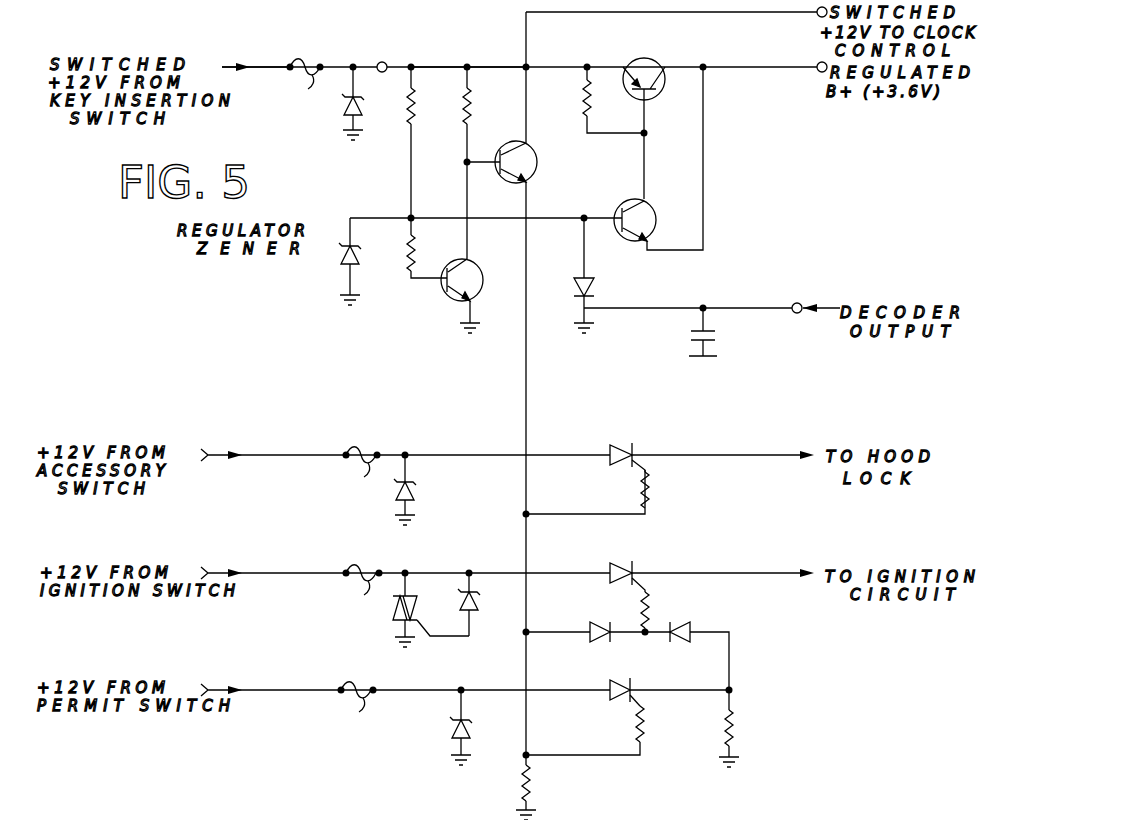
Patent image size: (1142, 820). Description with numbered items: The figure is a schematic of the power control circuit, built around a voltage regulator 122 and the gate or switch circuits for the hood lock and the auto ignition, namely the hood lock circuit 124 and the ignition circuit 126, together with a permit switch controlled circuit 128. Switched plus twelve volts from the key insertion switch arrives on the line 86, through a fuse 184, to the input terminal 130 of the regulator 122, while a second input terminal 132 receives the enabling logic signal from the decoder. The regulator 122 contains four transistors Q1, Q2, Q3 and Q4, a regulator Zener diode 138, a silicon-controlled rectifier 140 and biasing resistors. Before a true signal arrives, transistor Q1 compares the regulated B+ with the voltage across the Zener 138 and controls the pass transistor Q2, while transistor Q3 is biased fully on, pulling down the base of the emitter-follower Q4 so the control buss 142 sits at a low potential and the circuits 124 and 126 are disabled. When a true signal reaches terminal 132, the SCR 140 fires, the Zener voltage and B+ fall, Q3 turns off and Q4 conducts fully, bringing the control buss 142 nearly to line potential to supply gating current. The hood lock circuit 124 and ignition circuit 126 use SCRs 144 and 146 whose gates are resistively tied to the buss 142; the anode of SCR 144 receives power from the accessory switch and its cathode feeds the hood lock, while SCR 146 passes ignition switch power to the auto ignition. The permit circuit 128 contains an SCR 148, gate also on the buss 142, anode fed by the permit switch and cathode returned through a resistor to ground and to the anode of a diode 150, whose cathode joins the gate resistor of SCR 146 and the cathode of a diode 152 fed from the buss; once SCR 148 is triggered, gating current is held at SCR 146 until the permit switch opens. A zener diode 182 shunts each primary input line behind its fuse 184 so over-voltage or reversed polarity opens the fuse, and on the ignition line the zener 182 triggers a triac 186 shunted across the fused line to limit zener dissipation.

The line 86 is at (274, 67).
The fuse 184 is at (314, 74).
The zener diode 182 is at (340, 110).
The input terminal 130 is at (384, 62).
The voltage regulator 122 is at (481, 63).
The regulator Zener diode 138 is at (338, 262).
The silicon-controlled rectifier 140 is at (598, 288).
The input terminal 132 is at (795, 302).
The control buss 142 is at (525, 398).
The SCR 144 is at (623, 446).
The hood lock circuit 124 is at (654, 452).
The SCR 146 is at (624, 564).
The ignition circuit 126 is at (648, 568).
The triac 186 is at (390, 604).
The diode 152 is at (598, 624).
The diode 150 is at (680, 622).
The SCR 148 is at (612, 700).
The permit switch controlled circuit 128 is at (742, 722).
The transistor Q1 is at (652, 214).
The pass transistor Q2 is at (654, 90).
The transistor Q3 is at (452, 304).
The emitter-follower Q4 is at (535, 168).